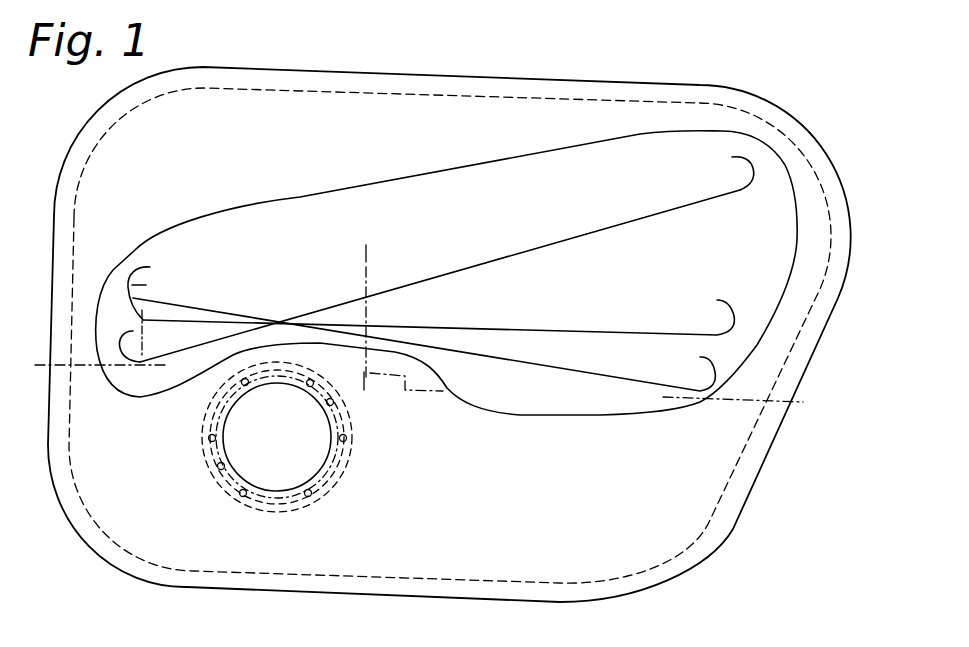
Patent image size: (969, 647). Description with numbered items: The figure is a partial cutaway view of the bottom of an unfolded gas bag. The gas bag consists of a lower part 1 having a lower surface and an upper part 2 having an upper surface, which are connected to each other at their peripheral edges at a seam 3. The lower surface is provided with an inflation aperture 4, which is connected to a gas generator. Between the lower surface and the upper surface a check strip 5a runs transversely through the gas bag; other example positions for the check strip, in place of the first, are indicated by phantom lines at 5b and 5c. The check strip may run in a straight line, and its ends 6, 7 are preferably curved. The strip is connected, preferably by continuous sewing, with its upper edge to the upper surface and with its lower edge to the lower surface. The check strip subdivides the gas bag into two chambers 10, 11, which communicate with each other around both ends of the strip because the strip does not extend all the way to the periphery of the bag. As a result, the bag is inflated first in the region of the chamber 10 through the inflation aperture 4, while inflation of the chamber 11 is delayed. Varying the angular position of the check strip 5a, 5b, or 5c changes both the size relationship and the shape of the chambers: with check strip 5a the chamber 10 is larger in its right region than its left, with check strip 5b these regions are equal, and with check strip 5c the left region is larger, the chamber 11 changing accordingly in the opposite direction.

The lower part 1 is at (547, 115).
The upper part 2 is at (33, 374).
The seam 3 is at (356, 250).
The inflation aperture 4 is at (263, 457).
The check strip 5a is at (657, 213).
The check strip 5b is at (652, 328).
The check strip 5c is at (630, 380).
The end of check strip 6 is at (125, 332).
The end of check strip 7 is at (750, 163).
The chamber 10 is at (499, 502).
The chamber 11 is at (346, 113).